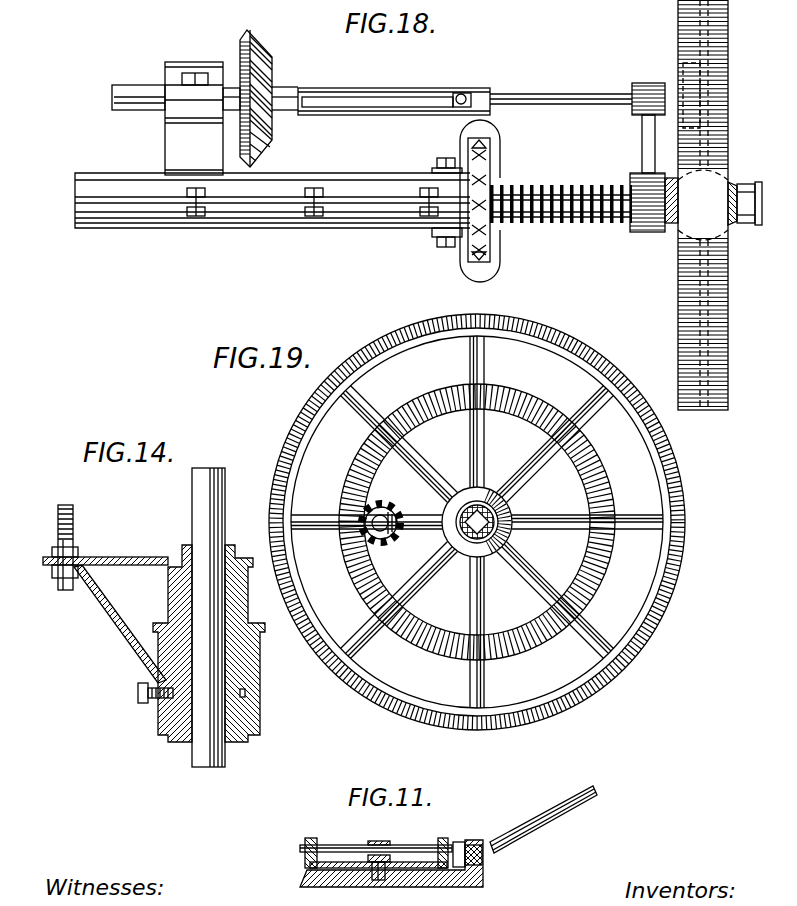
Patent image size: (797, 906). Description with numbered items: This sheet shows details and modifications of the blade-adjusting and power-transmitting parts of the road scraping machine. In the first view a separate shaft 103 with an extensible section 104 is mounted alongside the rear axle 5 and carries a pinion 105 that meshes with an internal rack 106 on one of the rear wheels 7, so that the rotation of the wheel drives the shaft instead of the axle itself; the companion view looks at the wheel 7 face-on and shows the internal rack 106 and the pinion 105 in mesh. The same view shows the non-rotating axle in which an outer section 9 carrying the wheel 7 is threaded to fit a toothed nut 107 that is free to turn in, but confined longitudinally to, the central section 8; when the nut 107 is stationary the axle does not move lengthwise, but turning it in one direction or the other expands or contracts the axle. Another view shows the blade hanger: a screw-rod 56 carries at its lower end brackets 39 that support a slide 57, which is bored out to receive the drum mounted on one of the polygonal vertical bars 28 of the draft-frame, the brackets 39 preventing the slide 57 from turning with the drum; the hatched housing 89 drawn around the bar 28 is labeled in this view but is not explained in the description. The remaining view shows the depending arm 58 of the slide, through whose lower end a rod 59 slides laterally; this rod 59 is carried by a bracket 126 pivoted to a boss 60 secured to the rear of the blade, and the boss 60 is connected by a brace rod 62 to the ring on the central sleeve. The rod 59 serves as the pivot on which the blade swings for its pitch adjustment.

In FIG. 18, the separate shaft 103 is at (128, 82).
In FIG. 18, the central section 8 is at (356, 173).
In FIG. 18, the extensible section 104 is at (548, 94).
In FIG. 19, the extensible section 104 is at (385, 528).
In FIG. 18, the internal rack 106 is at (682, 66).
In FIG. 19, the internal rack 106 is at (372, 458).
In FIG. 18, the pinion 105 is at (692, 116).
In FIG. 19, the pinion 105 is at (384, 504).
In FIG. 18, the rear wheel 7 is at (678, 303).
In FIG. 19, the rear wheel 7 is at (477, 522).
In FIG. 18, the toothed nut 107 is at (494, 170).
In FIG. 18, the outer section 9 is at (578, 221).
In FIG. 19, the rear axle 5 is at (471, 503).
In FIG. 14, the vertical bar 28 is at (235, 755).
In FIG. 14, the bearing housing 89 is at (172, 595).
In FIG. 14, the slide 57 is at (261, 680).
In FIG. 14, the bracket 39 is at (122, 640).
In FIG. 14, the screw-rod 56 is at (73, 520).
In FIG. 11, the boss 60 is at (432, 883).
In FIG. 11, the bracket 126 is at (310, 866).
In FIG. 11, the rod 59 is at (343, 845).
In FIG. 11, the depending arm 58 is at (380, 841).
In FIG. 11, the rod 62 is at (525, 826).